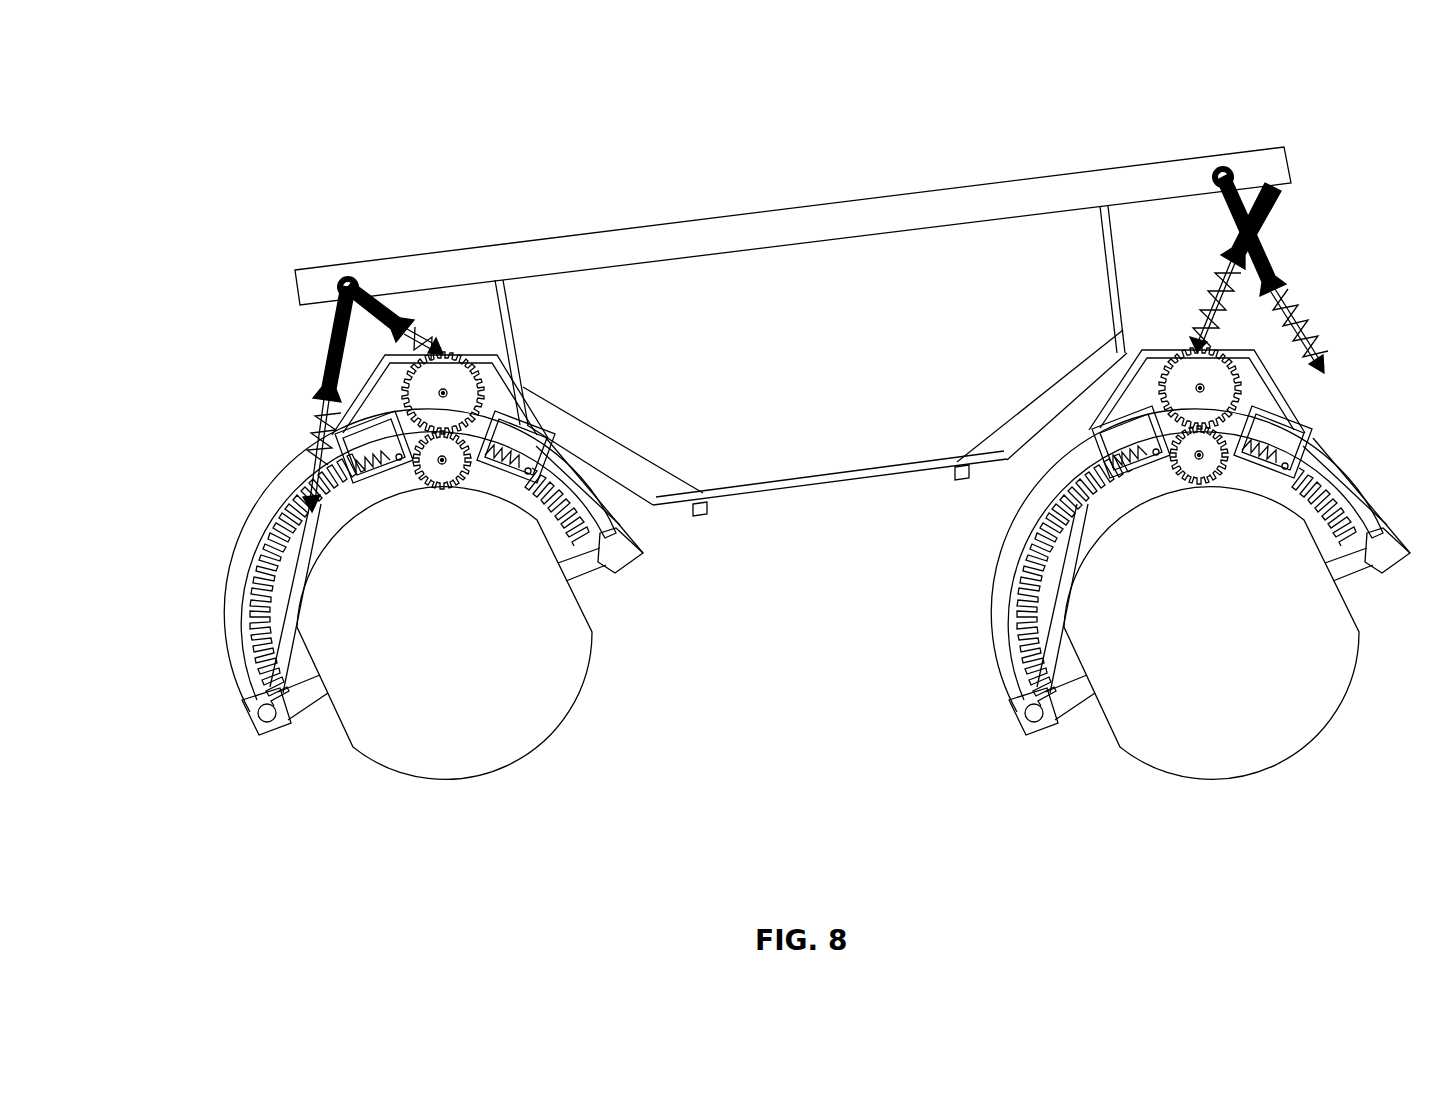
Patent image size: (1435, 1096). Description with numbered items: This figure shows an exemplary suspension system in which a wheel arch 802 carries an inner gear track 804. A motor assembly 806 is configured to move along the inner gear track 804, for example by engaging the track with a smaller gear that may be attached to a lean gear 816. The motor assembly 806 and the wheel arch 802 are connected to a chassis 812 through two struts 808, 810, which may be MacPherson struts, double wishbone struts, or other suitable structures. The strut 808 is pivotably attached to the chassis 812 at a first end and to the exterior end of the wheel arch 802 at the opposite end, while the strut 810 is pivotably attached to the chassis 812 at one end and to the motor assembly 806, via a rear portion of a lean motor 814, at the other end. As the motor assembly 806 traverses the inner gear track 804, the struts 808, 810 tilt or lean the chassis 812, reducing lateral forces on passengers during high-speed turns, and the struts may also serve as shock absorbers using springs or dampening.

The wheel arch 802 is at (640, 558).
The inner gear track 804 is at (570, 480).
The motor assembly 806 is at (360, 395).
The strut 808 is at (333, 327).
The strut 810 is at (388, 315).
The chassis 812 is at (1163, 157).
The lean motor 814 is at (495, 372).
The lean gear 816 is at (447, 490).